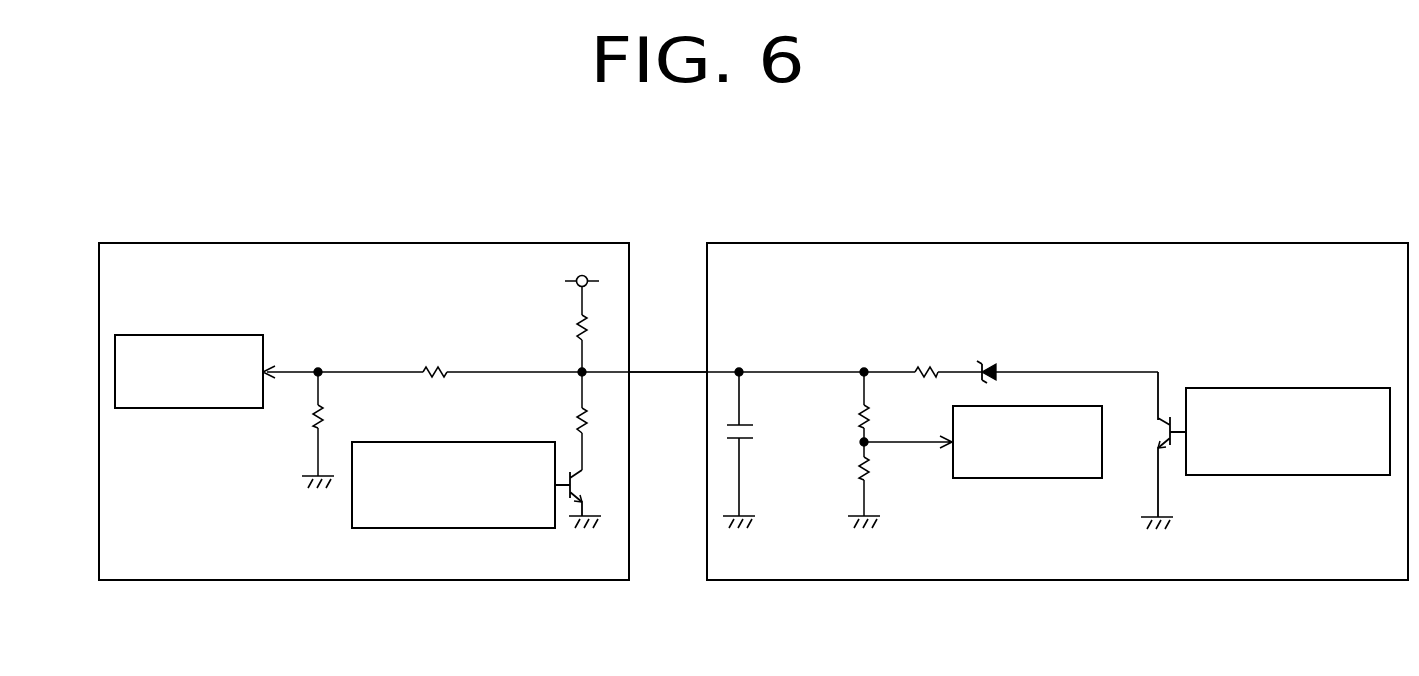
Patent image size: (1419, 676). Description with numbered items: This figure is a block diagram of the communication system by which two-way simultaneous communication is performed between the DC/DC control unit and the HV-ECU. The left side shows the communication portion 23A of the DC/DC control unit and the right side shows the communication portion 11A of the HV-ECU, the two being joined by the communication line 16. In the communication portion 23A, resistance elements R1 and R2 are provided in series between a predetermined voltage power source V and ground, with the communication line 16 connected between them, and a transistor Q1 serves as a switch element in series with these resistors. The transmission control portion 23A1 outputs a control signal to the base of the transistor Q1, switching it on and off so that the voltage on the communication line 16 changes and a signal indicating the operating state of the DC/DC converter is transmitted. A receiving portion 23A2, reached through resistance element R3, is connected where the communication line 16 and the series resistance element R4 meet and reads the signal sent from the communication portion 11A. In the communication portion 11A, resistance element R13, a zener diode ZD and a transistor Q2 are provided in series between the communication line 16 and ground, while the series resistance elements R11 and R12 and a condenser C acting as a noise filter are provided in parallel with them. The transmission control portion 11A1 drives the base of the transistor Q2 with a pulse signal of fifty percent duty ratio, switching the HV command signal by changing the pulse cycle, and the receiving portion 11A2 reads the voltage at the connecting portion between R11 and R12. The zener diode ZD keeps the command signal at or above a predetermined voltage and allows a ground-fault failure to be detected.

The communication portion 23A is at (525, 242).
The communication portion 11A is at (975, 242).
The transmission control portion 23A1 is at (432, 529).
The receiving portion 23A2 is at (204, 334).
The transmission control portion 11A1 is at (1275, 387).
The receiving portion 11A2 is at (1034, 480).
The communication line 16 is at (666, 370).
The resistance element R1 is at (580, 318).
The resistance element R2 is at (580, 412).
The resistance element R3 is at (423, 368).
The resistance element R4 is at (315, 420).
The resistance element R11 is at (867, 405).
The resistance element R12 is at (867, 475).
The resistance element R13 is at (916, 368).
The condenser C is at (739, 420).
The zener diode ZD is at (985, 360).
The transistor Q1 is at (592, 499).
The transistor Q2 is at (1162, 432).
The voltage power source V is at (582, 265).